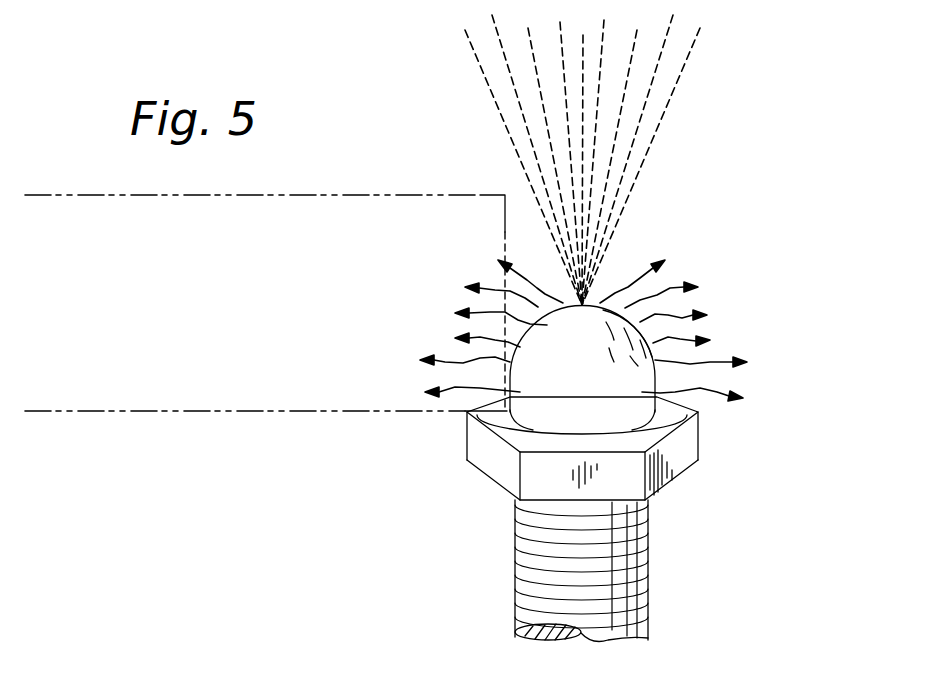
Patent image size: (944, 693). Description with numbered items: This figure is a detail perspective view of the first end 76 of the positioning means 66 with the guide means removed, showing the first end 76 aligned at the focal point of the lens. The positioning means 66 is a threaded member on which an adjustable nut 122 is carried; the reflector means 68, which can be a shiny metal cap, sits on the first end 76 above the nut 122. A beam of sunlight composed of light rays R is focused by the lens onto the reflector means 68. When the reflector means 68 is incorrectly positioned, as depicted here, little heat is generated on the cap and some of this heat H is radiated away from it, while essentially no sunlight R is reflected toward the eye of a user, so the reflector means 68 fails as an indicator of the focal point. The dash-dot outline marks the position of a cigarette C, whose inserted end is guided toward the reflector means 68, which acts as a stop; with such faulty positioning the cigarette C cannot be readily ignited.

The reflector means 68 is at (527, 412).
The adjustable nut 122 is at (688, 445).
The first end of the positioning means 76 is at (657, 490).
The positioning means 66 is at (648, 570).
The light rays R is at (482, 70).
The heat H is at (493, 290).
The cigarette C is at (153, 413).